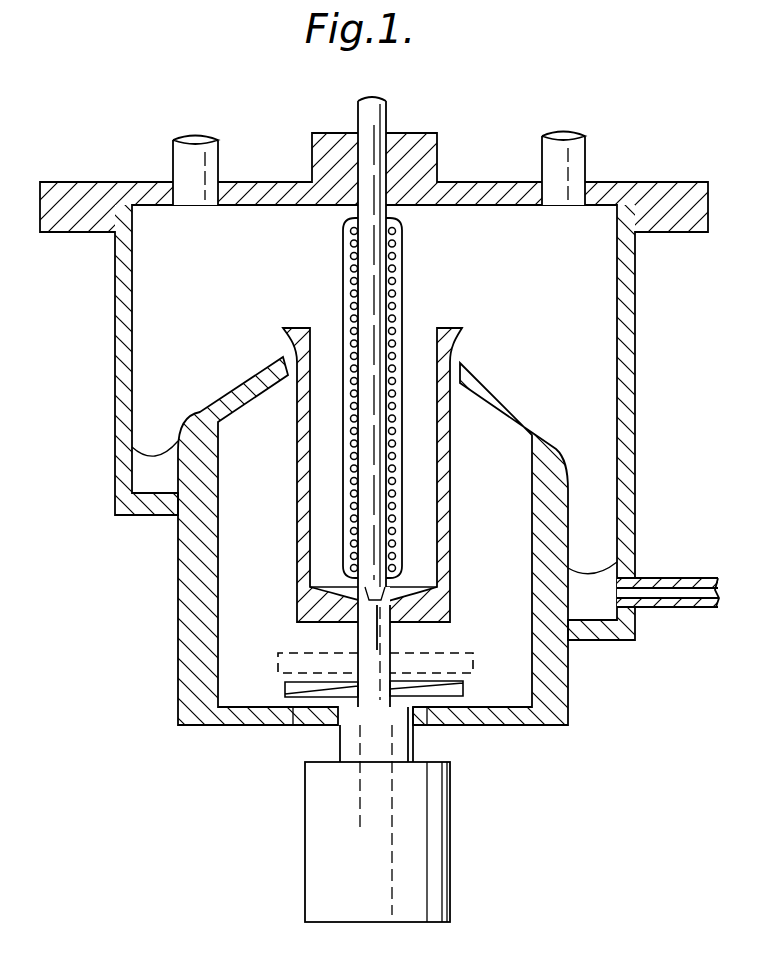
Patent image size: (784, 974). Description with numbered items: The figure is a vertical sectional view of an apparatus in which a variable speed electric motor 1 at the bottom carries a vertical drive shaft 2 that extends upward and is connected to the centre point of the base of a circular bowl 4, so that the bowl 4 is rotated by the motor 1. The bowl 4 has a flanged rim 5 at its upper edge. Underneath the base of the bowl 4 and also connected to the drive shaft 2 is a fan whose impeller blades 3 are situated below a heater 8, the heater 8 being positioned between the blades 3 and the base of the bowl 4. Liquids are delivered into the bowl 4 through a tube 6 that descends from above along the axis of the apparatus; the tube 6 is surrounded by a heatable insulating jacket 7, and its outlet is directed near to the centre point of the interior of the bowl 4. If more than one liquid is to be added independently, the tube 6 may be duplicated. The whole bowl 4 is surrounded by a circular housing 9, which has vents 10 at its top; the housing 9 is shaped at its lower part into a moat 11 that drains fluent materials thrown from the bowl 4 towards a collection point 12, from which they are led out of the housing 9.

The variable speed electric motor 1 is at (433, 838).
The vertical drive shaft 2 is at (377, 644).
The impeller blades 3 is at (463, 691).
The circular bowl 4 is at (452, 420).
The flanged rim 5 is at (455, 330).
The tube 6 is at (376, 126).
The heatable insulating jacket 7 is at (402, 280).
The heater 8 is at (277, 668).
The circular housing 9 is at (123, 370).
The vents 10 is at (193, 137).
The moat 11 is at (145, 477).
The collection point 12 is at (600, 590).